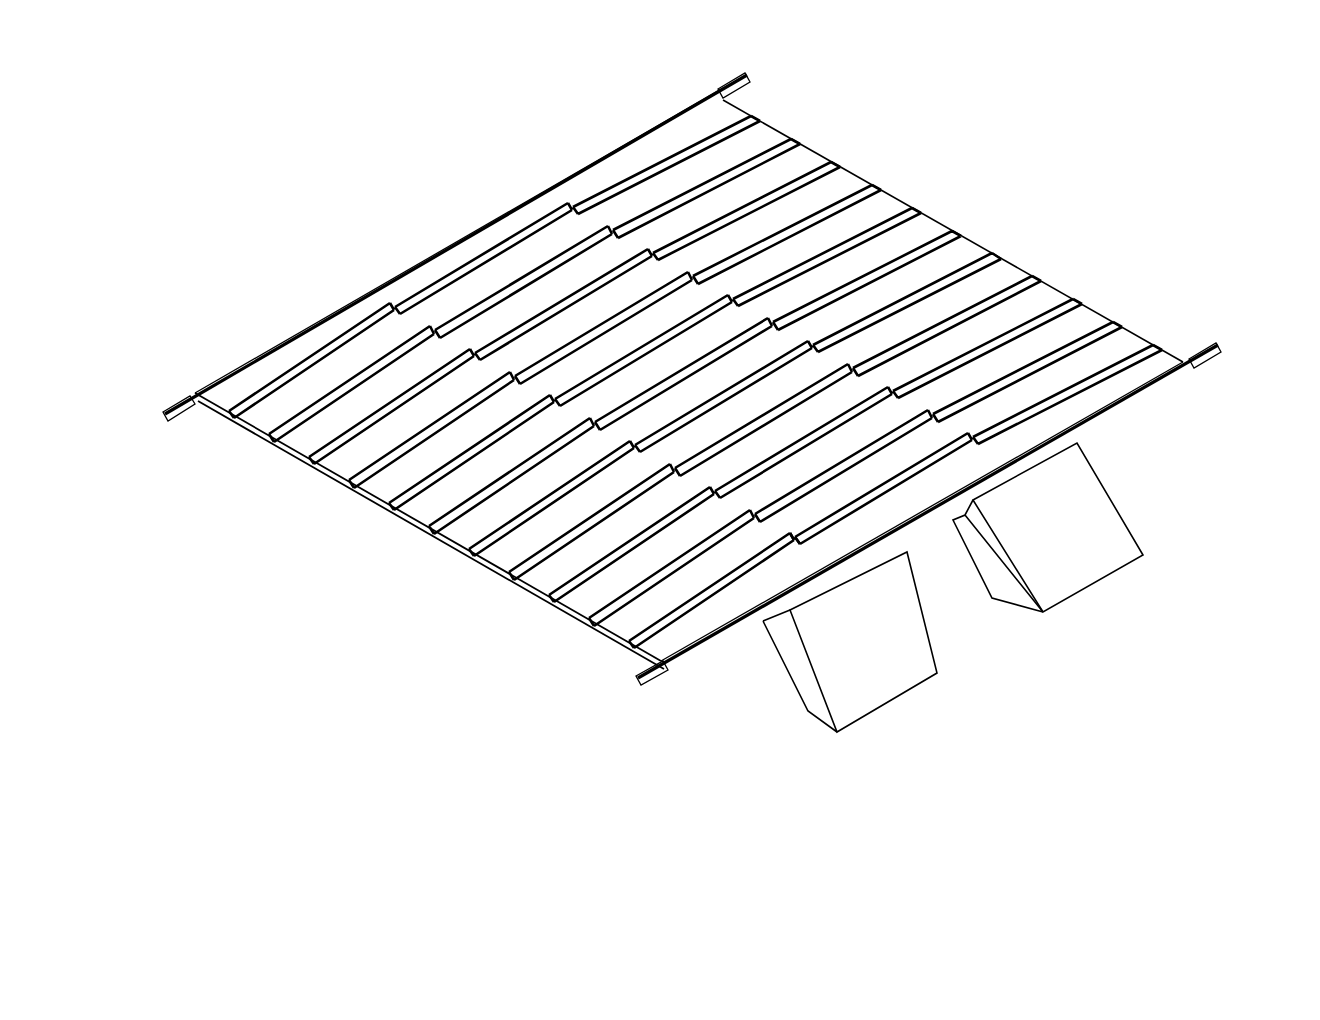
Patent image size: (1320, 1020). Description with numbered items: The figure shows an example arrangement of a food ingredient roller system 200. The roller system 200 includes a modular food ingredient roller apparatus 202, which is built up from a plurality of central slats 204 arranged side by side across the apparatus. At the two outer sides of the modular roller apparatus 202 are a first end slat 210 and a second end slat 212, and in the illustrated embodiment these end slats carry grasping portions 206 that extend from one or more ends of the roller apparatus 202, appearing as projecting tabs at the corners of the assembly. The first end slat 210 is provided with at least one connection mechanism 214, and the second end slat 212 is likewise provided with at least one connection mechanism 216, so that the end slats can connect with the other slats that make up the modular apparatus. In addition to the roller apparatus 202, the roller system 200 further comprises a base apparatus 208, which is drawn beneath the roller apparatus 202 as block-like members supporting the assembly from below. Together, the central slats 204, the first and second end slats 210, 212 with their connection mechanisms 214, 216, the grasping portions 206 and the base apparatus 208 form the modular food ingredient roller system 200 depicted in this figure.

The food ingredient roller system 200 is at (310, 172).
The modular food ingredient roller apparatus 202 is at (903, 173).
The central slats 204 is at (1115, 347).
The grasping portions 206 is at (742, 78).
The base apparatus 208 is at (1087, 525).
The first end slat 210 is at (268, 372).
The second end slat 212 is at (687, 633).
The connection mechanism 214 is at (487, 250).
The connection mechanism 216 is at (817, 533).